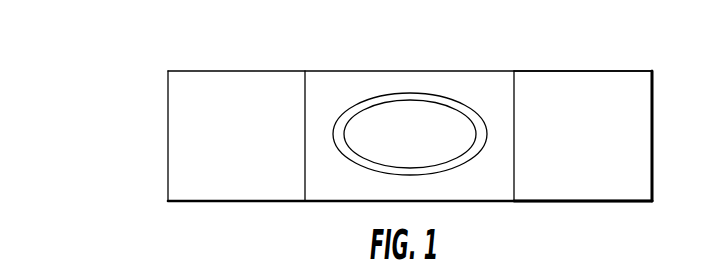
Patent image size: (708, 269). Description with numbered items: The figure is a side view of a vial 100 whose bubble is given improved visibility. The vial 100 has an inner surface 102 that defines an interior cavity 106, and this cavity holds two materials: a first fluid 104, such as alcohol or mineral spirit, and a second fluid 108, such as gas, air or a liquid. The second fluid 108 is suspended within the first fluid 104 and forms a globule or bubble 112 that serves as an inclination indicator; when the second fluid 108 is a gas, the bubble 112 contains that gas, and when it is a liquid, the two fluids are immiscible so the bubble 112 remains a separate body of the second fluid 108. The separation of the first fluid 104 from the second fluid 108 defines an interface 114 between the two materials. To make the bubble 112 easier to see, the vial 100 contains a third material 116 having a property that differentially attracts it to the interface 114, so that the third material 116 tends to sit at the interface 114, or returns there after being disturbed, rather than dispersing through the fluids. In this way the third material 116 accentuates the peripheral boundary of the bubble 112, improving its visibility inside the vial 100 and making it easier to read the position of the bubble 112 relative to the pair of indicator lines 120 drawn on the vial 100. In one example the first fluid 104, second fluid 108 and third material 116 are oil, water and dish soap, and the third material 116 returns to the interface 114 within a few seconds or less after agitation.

The vial 100 is at (112, 50).
The inner surface 102 is at (537, 80).
The first fluid 104 is at (592, 146).
The interior cavity 106 is at (541, 163).
The second fluid 108 is at (427, 146).
The bubble 112 is at (375, 95).
The interface 114 is at (381, 97).
The third material 116 is at (427, 92).
The indicator lines 120 is at (304, 170).